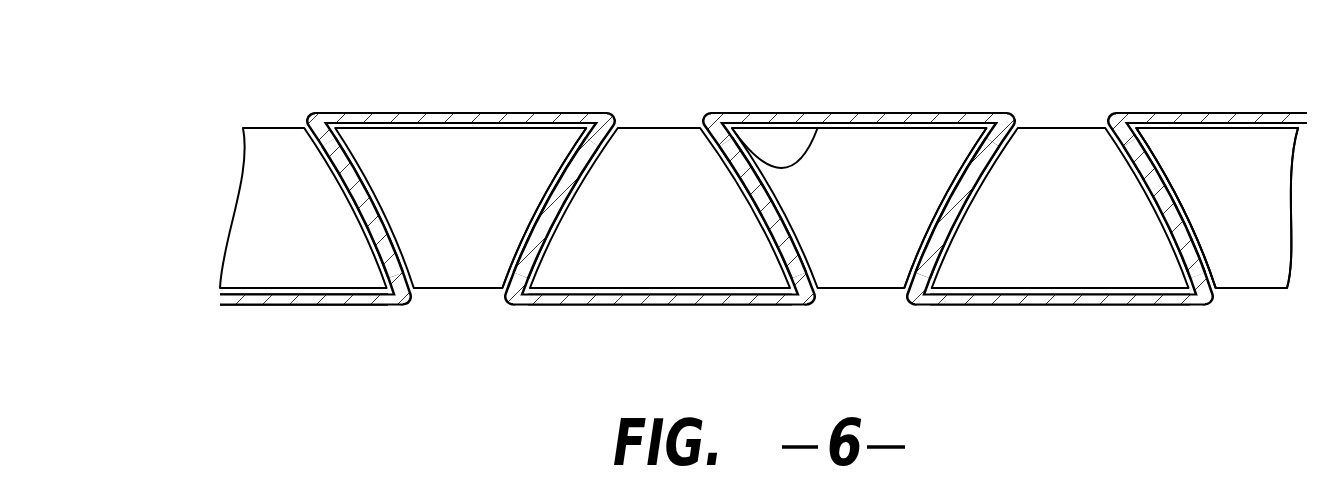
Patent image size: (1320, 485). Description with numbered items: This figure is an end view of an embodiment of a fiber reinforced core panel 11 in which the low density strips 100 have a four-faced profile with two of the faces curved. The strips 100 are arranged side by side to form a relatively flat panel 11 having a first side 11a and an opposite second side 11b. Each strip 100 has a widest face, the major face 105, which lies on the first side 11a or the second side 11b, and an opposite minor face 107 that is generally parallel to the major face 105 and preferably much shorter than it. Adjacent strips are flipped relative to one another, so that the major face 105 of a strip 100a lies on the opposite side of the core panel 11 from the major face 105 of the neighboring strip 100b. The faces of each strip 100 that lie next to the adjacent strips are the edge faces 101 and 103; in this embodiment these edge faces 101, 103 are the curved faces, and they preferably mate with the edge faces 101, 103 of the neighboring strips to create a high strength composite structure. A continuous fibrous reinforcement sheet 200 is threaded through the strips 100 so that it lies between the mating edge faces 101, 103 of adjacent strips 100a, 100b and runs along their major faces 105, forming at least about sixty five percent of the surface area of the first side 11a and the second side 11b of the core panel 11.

The core panel 11 is at (160, 128).
The first side 11a is at (205, 302).
The second side 11b is at (205, 118).
The low density strip 100 is at (1247, 160).
The strip 100a is at (490, 212).
The strip 100b is at (694, 237).
The edge face 101 is at (563, 163).
The edge face 103 is at (610, 175).
The major face 105 is at (840, 130).
The minor face 107 is at (662, 130).
The continuous fibrous reinforcement sheet 200 is at (347, 112).